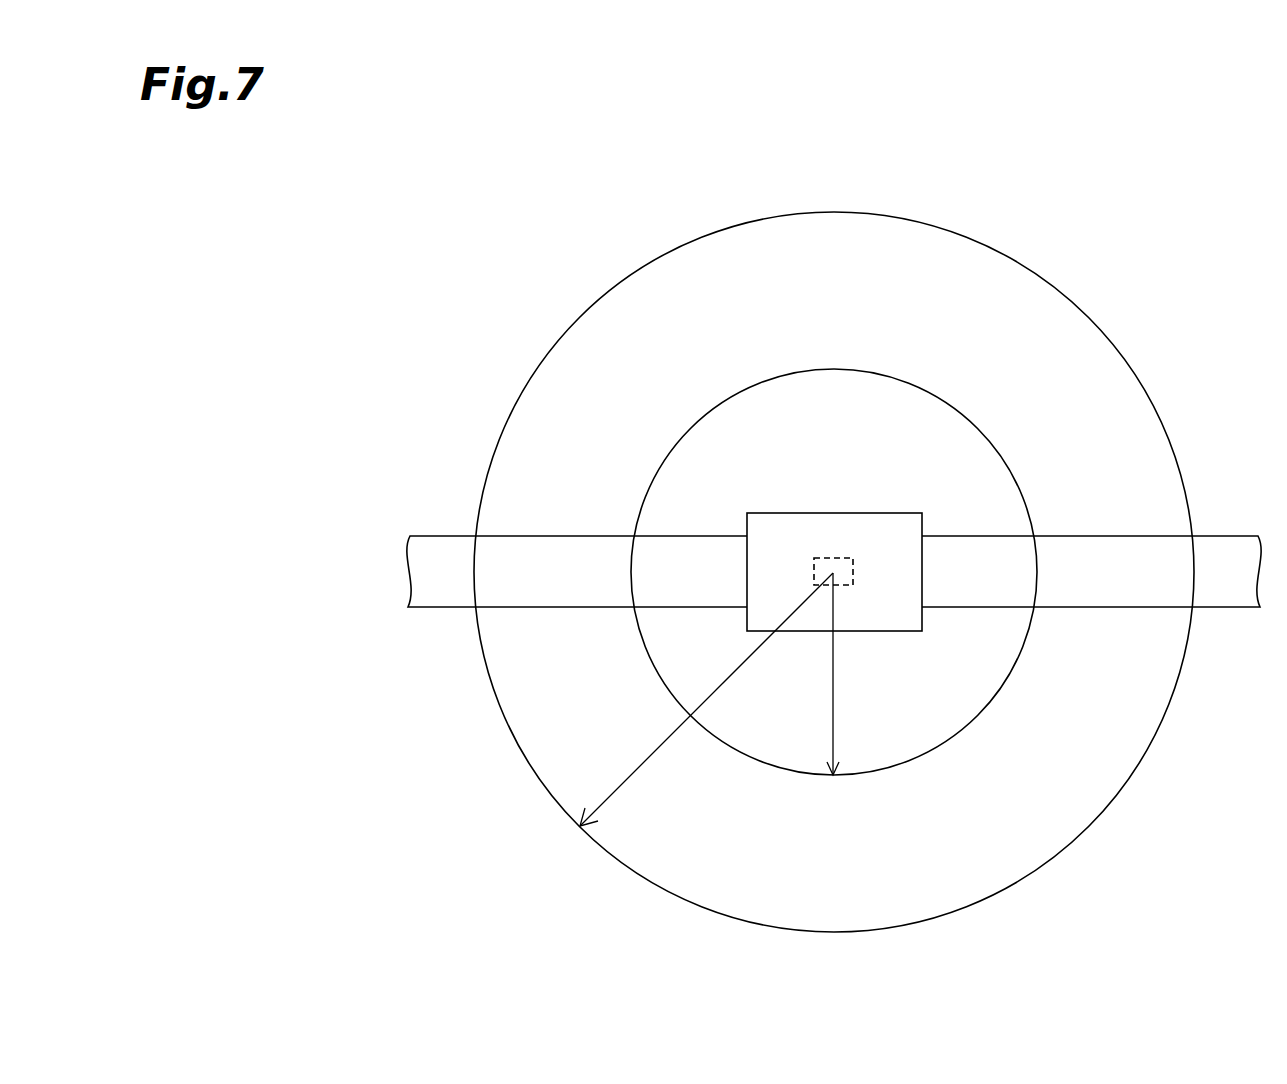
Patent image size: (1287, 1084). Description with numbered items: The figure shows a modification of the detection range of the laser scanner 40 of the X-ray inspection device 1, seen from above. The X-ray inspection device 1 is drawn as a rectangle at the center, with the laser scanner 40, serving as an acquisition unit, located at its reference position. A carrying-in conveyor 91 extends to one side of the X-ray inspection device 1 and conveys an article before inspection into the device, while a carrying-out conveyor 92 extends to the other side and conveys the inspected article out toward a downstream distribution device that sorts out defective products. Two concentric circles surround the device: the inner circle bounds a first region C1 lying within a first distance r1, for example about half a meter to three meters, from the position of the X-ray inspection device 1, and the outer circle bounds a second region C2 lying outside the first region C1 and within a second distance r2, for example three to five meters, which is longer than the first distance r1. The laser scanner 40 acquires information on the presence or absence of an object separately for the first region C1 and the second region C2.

The X-ray inspection device 1 is at (924, 528).
The laser scanner 40 is at (842, 558).
The carrying-in conveyor 91 is at (567, 585).
The carrying-out conveyor 92 is at (1220, 585).
The first region C1 is at (852, 424).
The second region C2 is at (852, 313).
The first distance r1 is at (850, 674).
The second distance r2 is at (706, 699).